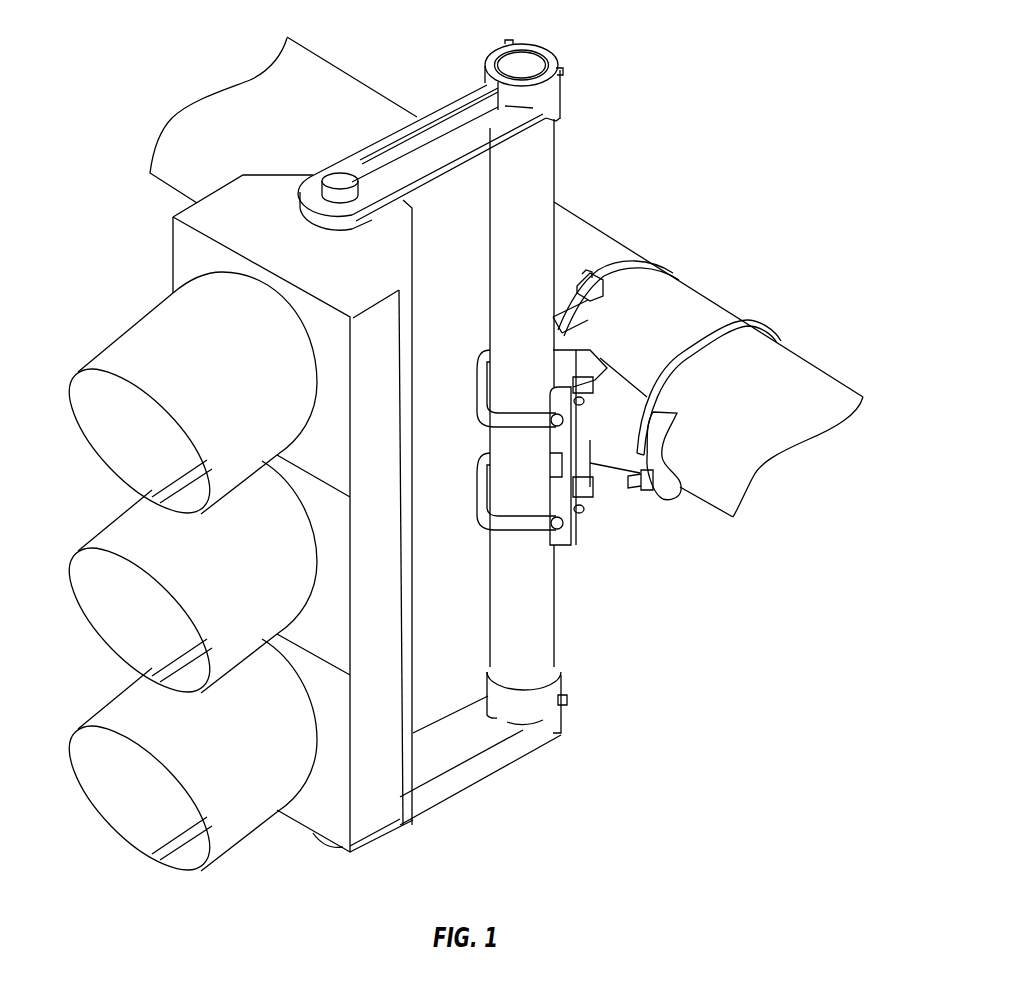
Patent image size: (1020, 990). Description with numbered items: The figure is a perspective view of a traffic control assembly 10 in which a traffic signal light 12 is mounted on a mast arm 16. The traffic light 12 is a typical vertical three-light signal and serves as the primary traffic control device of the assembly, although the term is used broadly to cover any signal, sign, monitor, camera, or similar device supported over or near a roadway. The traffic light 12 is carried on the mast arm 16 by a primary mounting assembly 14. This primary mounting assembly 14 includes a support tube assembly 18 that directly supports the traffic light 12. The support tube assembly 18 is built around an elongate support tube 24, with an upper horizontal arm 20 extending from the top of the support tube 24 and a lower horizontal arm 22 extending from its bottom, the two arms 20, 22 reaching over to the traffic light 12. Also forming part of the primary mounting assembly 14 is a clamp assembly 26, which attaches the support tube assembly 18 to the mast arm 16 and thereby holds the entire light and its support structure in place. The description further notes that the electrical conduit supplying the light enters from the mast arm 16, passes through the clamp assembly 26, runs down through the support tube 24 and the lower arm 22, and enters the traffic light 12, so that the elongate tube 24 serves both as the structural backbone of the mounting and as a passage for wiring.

The traffic control assembly 10 is at (602, 63).
The traffic signal light 12 is at (243, 183).
The primary mounting assembly 14 is at (555, 163).
The mast arm 16 is at (292, 80).
The support tube assembly 18 is at (540, 252).
The upper horizontal arm 20 is at (433, 120).
The lower horizontal arm 22 is at (473, 777).
The elongate support tube 24 is at (547, 600).
The clamp assembly 26 is at (598, 447).